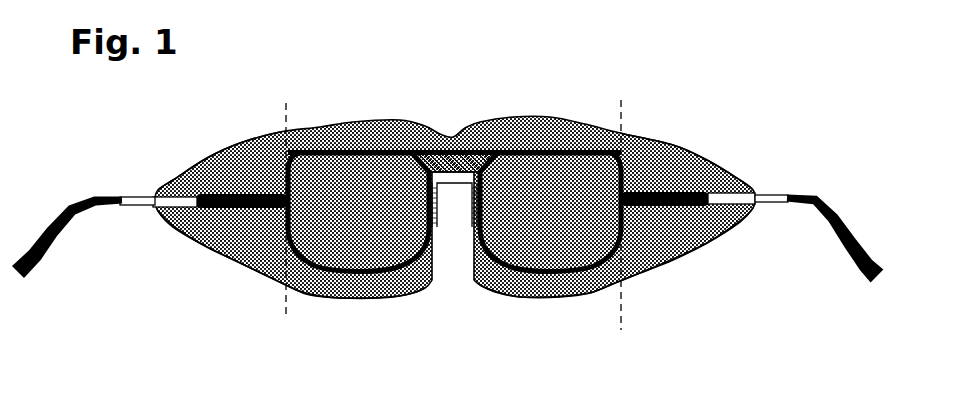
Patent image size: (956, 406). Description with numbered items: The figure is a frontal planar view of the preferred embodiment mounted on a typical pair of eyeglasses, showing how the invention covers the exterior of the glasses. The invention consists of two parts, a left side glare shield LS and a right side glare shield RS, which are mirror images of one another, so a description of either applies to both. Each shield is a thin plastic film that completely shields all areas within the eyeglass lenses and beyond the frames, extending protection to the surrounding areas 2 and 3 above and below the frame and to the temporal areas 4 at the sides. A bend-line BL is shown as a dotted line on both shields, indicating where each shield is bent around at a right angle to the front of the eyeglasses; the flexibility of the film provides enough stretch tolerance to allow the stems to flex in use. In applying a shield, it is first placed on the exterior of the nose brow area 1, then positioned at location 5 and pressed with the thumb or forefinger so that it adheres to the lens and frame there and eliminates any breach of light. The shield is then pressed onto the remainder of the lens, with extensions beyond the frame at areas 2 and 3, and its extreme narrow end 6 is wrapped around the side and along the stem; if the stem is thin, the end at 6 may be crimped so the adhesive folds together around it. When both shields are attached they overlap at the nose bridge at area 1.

The nose brow area 1 is at (451, 144).
The surrounding area 2 is at (354, 138).
The surrounding area 3 is at (338, 287).
The temporal area 4 is at (232, 178).
The nose location 5 is at (473, 223).
The glare shield extreme end 6 is at (175, 218).
The bend-line BL is at (453, 213).
The right side glare shield RS is at (362, 218).
The left side glare shield LS is at (553, 215).